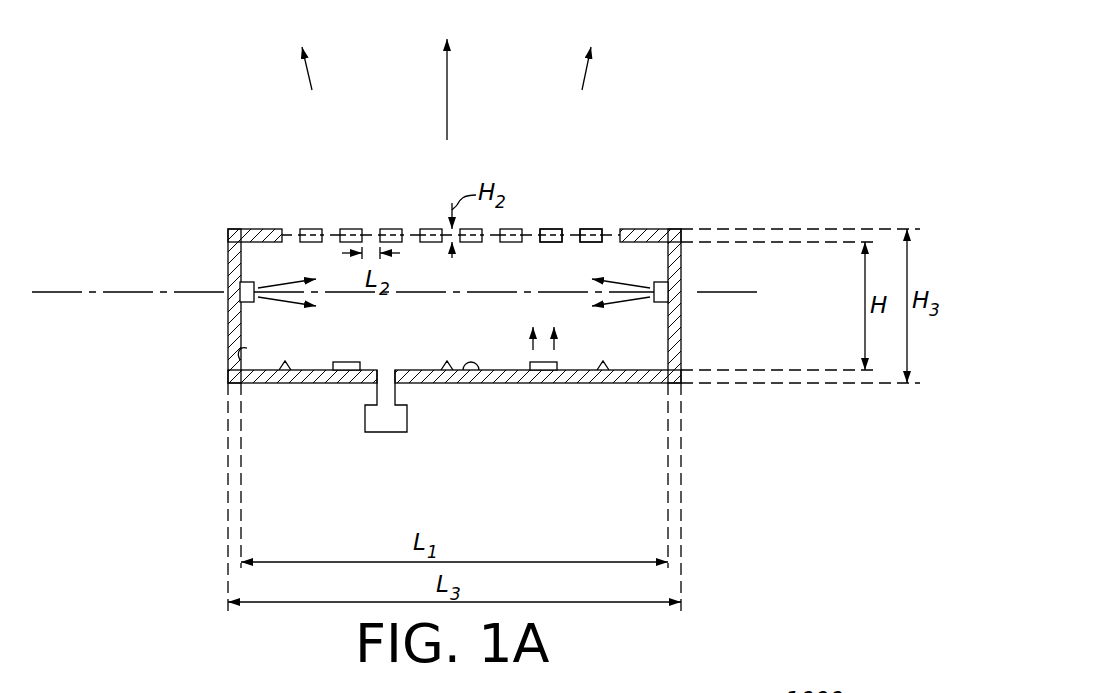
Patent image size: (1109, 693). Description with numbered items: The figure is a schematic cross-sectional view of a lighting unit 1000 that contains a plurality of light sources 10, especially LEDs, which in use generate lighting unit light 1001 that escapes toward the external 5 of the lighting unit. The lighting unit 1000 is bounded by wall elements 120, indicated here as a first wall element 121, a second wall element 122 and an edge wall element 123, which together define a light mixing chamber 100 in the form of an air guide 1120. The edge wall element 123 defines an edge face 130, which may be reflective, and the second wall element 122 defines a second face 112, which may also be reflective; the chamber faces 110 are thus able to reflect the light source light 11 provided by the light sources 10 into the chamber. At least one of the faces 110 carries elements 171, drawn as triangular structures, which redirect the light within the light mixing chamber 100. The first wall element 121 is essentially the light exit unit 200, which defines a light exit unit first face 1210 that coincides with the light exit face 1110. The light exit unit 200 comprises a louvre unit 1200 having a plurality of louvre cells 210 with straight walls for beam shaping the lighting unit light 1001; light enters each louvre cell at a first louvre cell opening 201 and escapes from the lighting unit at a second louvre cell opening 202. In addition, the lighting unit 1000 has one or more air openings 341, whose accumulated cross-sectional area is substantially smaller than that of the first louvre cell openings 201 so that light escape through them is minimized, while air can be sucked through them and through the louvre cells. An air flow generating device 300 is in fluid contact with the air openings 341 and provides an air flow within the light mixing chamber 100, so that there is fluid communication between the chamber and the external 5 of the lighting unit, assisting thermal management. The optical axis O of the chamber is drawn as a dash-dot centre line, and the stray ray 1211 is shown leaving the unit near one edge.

The lighting unit 1000 is at (737, 94).
The external 5 is at (742, 174).
The lighting unit light 1001 is at (589, 66).
The louvre unit 1200 is at (501, 113).
The light exiting through side opening 1211 is at (332, 228).
The light exit unit 200 is at (275, 142).
The wall elements 120 is at (409, 200).
The first wall element 121 is at (283, 216).
The louvre cells 210 is at (427, 208).
The second louvre cell opening 202 is at (534, 208).
The light exit face 1110 is at (621, 177).
The light exit unit first face 1210 is at (610, 208).
The edge face 130 is at (665, 229).
The light sources 10 is at (240, 290).
The light source light 11 is at (283, 303).
The optical axis O is at (133, 292).
The air openings 341 is at (385, 372).
The first louvre cell opening 201 is at (485, 254).
The air guide 1120 is at (480, 358).
The light mixing chamber 100 is at (480, 358).
The edge wall element 123 is at (673, 355).
The elements configured to redirect light 171 is at (281, 372).
The air flow generating device 300 is at (348, 450).
The faces 110 is at (467, 421).
The second face 112 is at (476, 372).
The second wall element 122 is at (567, 375).